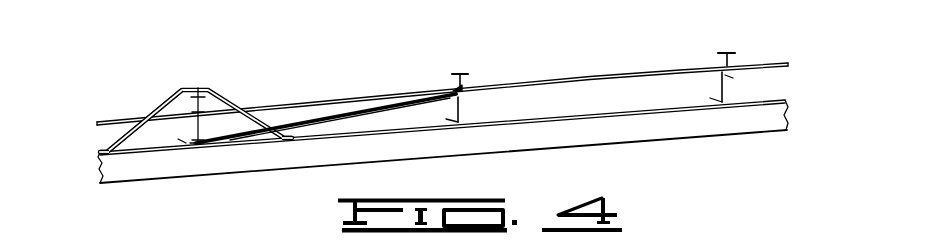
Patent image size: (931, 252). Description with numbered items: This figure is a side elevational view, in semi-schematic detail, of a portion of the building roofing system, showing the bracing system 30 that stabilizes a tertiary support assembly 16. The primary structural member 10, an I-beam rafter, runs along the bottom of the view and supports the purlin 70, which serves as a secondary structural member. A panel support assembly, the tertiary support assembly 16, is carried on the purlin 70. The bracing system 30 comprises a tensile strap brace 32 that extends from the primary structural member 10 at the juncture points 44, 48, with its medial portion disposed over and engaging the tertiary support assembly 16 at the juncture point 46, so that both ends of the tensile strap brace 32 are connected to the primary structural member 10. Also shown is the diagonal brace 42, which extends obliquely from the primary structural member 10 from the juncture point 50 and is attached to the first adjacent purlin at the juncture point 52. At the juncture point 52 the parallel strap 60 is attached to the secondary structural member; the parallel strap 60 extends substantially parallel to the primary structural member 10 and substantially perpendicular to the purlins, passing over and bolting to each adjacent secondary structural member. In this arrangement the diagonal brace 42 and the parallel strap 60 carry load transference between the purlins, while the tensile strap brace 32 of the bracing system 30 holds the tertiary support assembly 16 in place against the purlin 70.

The primary structural member 10 is at (205, 165).
The tertiary support assembly 16 is at (748, 42).
The bracing system 30 is at (177, 111).
The tensile strap brace 32 is at (178, 98).
The diagonal brace 42 is at (362, 103).
The juncture point 44 is at (104, 151).
The juncture point 46 is at (198, 88).
The juncture point 48 is at (282, 140).
The juncture point 50 is at (198, 142).
The juncture point 52 is at (492, 75).
The parallel strap 60 is at (592, 78).
The purlin 70 is at (461, 113).